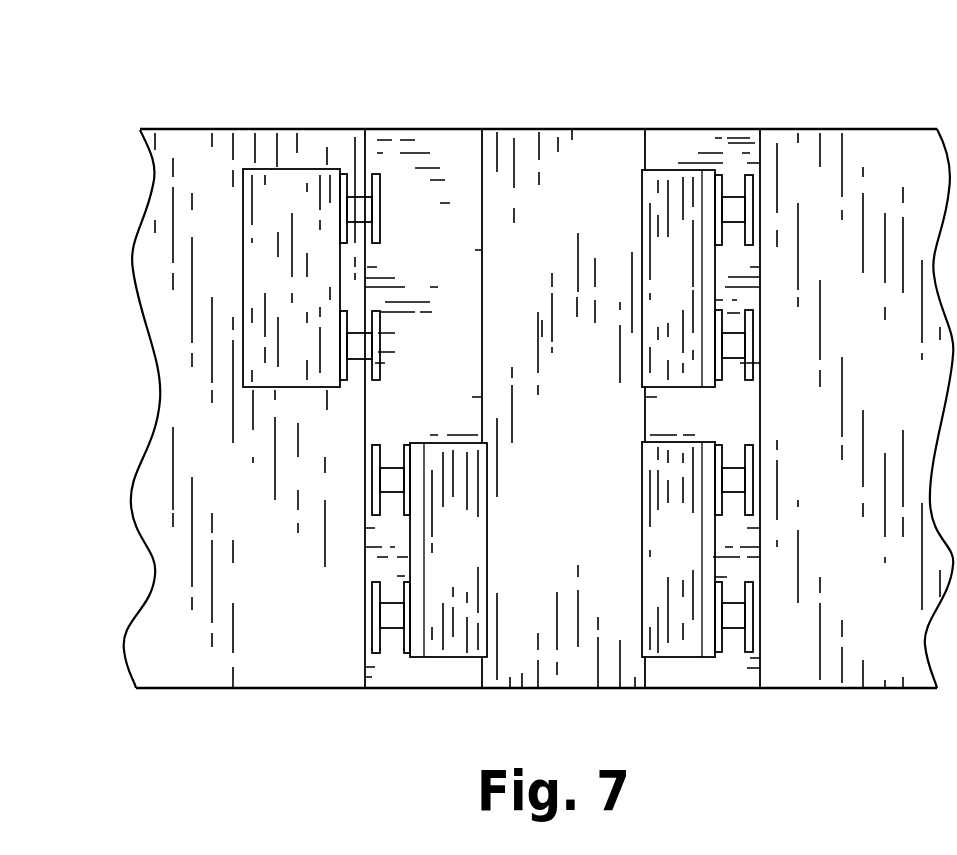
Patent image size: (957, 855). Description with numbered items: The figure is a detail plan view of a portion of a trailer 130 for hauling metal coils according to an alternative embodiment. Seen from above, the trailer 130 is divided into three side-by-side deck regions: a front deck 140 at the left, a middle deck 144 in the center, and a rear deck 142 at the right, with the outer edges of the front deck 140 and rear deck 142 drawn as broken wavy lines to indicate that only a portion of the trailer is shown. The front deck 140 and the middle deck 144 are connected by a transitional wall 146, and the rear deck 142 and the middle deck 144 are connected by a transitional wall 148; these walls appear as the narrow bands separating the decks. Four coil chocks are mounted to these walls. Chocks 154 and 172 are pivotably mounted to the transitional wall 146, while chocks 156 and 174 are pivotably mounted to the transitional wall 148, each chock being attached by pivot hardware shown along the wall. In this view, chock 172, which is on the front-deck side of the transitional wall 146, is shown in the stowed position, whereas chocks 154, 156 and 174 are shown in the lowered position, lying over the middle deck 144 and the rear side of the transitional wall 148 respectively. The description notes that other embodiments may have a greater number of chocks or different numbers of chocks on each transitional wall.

The trailer 130 is at (188, 739).
The front deck 140 is at (198, 129).
The rear deck 142 is at (890, 129).
The middle deck 144 is at (587, 128).
The transitional wall 146 is at (425, 128).
The transitional wall 148 is at (713, 128).
The coil chock 154 is at (487, 555).
The coil chock 156 is at (640, 488).
The coil chock 172 is at (298, 387).
The coil chock 174 is at (640, 238).